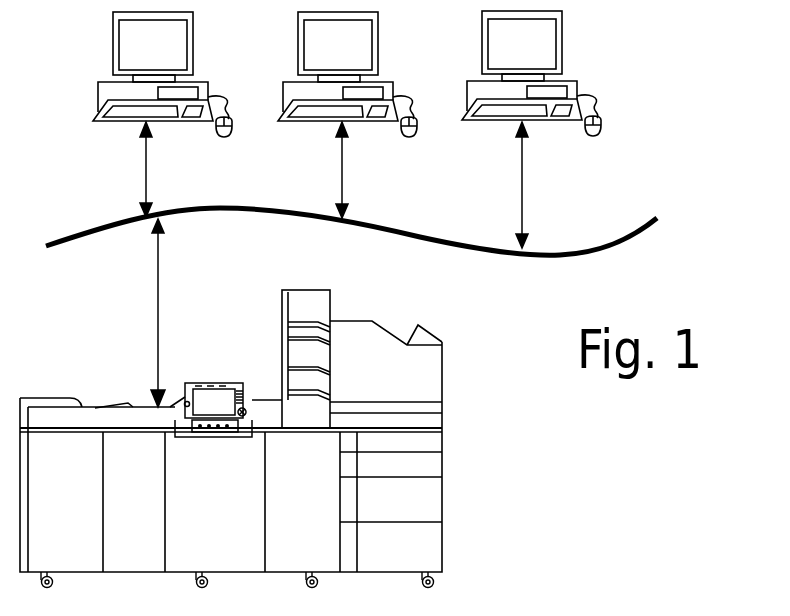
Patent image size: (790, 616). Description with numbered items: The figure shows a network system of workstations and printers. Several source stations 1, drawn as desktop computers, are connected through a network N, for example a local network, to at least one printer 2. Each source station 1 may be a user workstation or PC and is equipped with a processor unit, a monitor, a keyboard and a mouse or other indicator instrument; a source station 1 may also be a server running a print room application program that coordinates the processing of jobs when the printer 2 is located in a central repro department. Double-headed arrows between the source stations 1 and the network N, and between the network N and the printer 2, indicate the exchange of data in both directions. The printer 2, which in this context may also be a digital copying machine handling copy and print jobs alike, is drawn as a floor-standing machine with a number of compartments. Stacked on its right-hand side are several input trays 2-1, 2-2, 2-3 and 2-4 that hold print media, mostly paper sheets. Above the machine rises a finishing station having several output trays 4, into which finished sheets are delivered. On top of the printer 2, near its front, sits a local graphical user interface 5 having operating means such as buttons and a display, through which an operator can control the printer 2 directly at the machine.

The source station 1 is at (193, 49).
The network N is at (487, 250).
The printer 2 is at (55, 398).
The output trays 4 is at (266, 335).
The local graphical user interface 5 is at (207, 383).
The input tray 2-1 is at (442, 443).
The input tray 2-2 is at (442, 467).
The input tray 2-3 is at (442, 500).
The input tray 2-4 is at (442, 545).